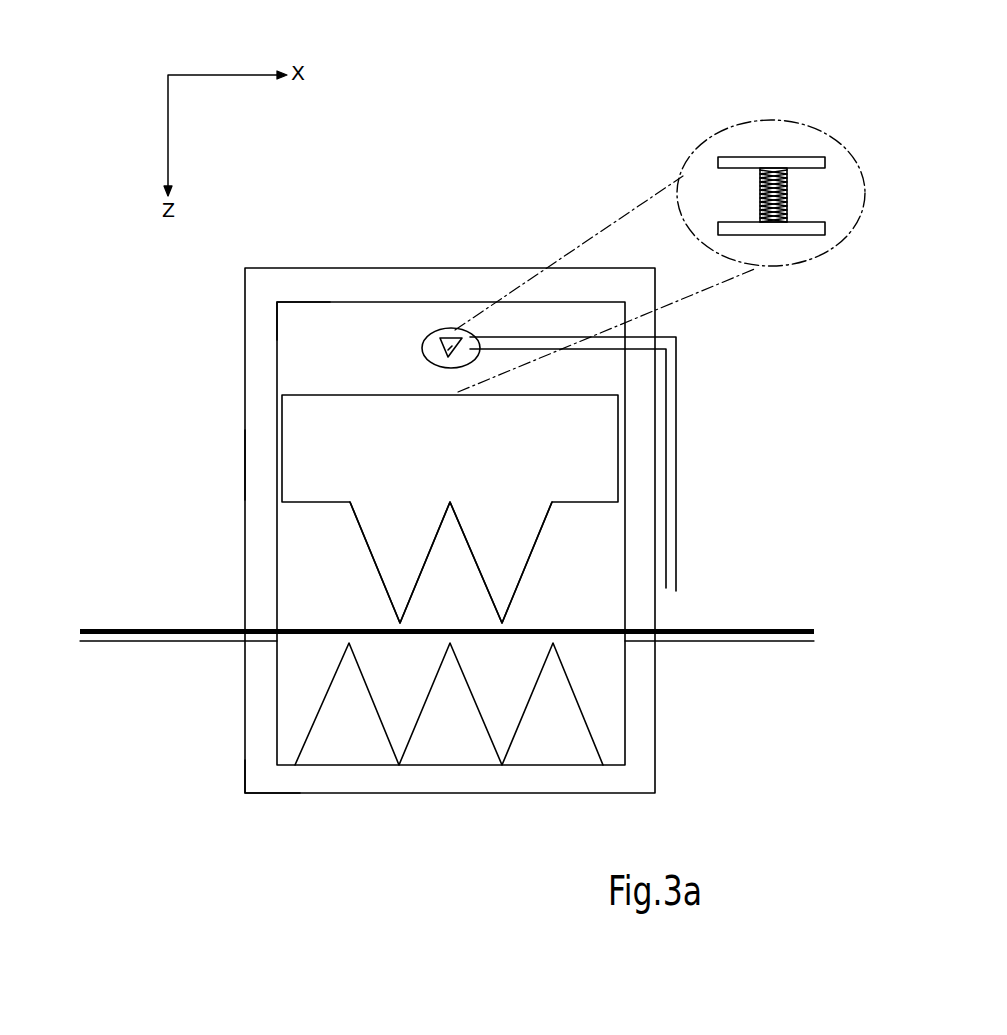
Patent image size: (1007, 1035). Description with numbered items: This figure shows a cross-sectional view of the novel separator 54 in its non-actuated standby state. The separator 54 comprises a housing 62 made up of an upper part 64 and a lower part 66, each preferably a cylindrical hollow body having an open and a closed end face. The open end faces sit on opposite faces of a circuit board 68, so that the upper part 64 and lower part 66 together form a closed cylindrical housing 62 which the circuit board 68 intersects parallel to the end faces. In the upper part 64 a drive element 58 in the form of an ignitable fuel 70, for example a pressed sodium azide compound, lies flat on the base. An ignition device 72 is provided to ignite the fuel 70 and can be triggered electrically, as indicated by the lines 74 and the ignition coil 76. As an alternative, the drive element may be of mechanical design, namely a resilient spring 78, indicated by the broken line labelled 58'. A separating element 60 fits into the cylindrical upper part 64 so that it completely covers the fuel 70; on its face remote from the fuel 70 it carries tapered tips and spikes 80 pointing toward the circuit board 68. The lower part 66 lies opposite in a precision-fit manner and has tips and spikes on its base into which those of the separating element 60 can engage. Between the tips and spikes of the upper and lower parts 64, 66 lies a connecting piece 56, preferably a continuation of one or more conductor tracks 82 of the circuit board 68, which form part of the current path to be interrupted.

The separator 54 is at (465, 168).
The connecting piece 56 is at (308, 633).
The drive element 58 is at (451, 474).
The drive element of mechanical design 58' is at (660, 198).
The separating element 60 is at (296, 444).
The housing 62 is at (182, 419).
The upper part 64 is at (254, 462).
The lower part 66 is at (250, 751).
The circuit board 68 is at (736, 642).
The ignitable fuel 70 is at (297, 325).
The ignition device 72 is at (435, 328).
The lines 74 is at (674, 434).
The ignition coil 76 is at (466, 330).
The resilient spring 78 is at (790, 200).
The tapered tips and spikes 80 is at (390, 518).
The conductor tracks 82 is at (704, 626).